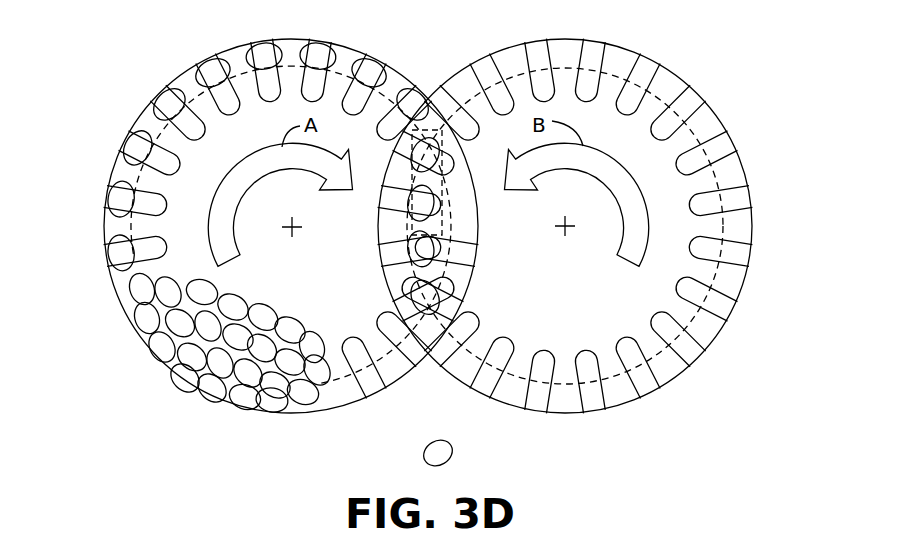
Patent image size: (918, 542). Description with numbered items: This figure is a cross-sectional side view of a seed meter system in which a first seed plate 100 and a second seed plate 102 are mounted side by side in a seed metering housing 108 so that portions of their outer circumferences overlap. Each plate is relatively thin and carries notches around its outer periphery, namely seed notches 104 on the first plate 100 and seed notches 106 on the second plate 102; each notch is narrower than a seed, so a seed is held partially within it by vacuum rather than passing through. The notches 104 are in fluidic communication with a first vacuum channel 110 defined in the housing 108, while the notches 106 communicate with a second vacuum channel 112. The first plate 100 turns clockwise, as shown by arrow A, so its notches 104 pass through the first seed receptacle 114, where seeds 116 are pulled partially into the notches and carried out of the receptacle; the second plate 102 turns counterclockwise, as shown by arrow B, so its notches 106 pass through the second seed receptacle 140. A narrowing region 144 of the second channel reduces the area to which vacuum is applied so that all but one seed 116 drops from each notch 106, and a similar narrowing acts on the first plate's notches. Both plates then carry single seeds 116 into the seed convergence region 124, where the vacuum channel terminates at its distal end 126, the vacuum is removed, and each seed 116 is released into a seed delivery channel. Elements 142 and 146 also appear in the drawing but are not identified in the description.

The first seed plate 100 is at (236, 152).
The second seed plate 102 is at (640, 157).
The seed notches 104 is at (373, 382).
The seed notches 106 is at (538, 398).
The seed metering housing 108 is at (243, 45).
The first vacuum channel 110 is at (106, 227).
The second vacuum channel 112 is at (641, 68).
The first seed receptacle 114 is at (230, 370).
The seeds 116 is at (118, 197).
The seed convergence region 124 is at (427, 127).
The distal end of the channel 126 is at (412, 235).
The second seed receptacle 140 is at (643, 373).
The pocket 142 is at (588, 398).
The narrowing region 144 is at (745, 195).
The pocket 146 is at (592, 58).